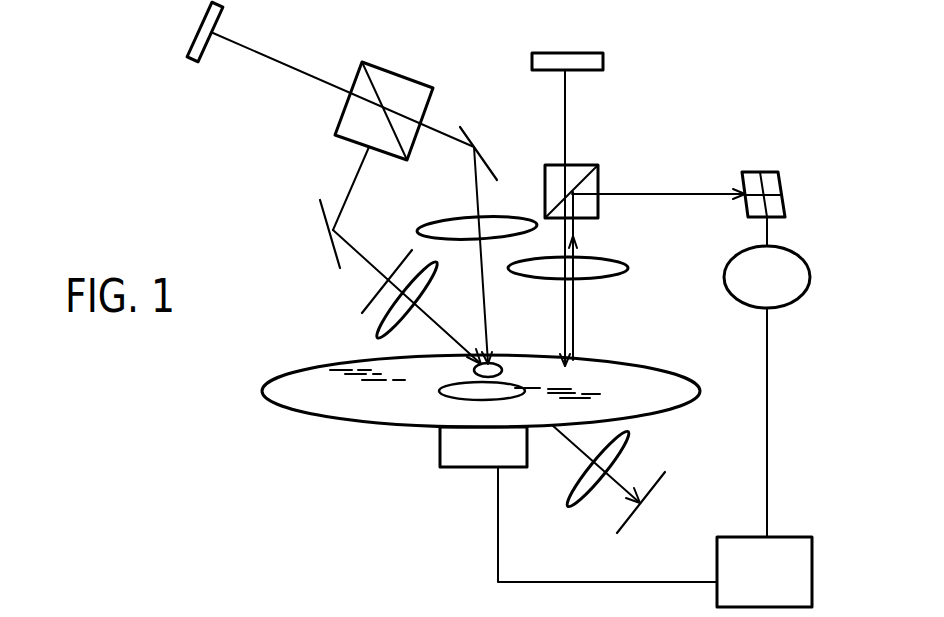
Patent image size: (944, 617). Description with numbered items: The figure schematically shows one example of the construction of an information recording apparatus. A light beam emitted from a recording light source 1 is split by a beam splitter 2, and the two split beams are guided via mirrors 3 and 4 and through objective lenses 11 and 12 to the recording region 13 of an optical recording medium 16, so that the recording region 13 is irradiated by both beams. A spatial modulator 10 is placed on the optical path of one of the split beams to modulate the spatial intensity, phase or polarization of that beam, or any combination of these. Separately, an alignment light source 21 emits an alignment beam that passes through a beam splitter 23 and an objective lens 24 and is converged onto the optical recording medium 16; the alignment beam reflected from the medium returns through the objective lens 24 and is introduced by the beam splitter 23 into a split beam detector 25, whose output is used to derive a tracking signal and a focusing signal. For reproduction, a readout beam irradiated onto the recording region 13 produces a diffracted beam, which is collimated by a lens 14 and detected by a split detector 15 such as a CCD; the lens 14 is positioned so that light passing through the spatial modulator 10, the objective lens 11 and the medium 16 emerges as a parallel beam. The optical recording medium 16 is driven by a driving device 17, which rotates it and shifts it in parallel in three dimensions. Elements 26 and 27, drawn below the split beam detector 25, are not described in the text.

The recording light source 1 is at (218, 24).
The beam splitter 2 is at (336, 125).
The mirror 3 is at (320, 215).
The mirror 4 is at (481, 153).
The spatial modulator 10 is at (398, 295).
The objective lens 11 is at (424, 296).
The objective lens 12 is at (462, 215).
The recording region 13 is at (502, 363).
The lens 14 is at (590, 500).
The split detector 15 is at (638, 514).
The optical recording medium 16 is at (313, 417).
The driving device 17 is at (448, 470).
The alignment light source 21 is at (605, 61).
The beam splitter 23 is at (600, 178).
The objective lens 24 is at (620, 276).
The split beam detector 25 is at (751, 171).
The differential amplifier 26 is at (748, 302).
The control unit 27 is at (732, 546).